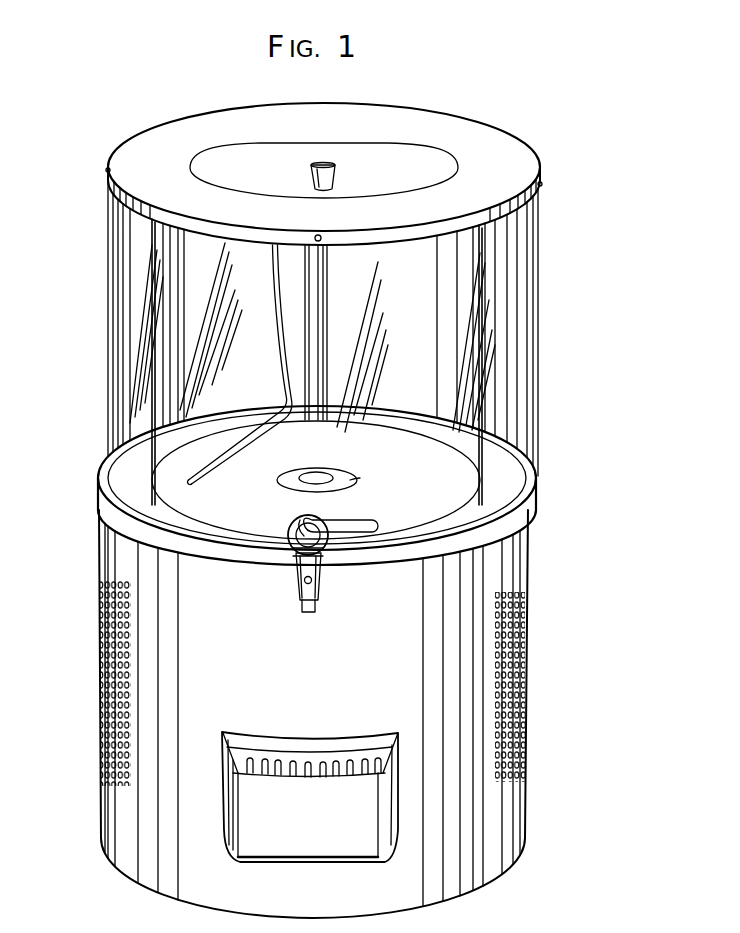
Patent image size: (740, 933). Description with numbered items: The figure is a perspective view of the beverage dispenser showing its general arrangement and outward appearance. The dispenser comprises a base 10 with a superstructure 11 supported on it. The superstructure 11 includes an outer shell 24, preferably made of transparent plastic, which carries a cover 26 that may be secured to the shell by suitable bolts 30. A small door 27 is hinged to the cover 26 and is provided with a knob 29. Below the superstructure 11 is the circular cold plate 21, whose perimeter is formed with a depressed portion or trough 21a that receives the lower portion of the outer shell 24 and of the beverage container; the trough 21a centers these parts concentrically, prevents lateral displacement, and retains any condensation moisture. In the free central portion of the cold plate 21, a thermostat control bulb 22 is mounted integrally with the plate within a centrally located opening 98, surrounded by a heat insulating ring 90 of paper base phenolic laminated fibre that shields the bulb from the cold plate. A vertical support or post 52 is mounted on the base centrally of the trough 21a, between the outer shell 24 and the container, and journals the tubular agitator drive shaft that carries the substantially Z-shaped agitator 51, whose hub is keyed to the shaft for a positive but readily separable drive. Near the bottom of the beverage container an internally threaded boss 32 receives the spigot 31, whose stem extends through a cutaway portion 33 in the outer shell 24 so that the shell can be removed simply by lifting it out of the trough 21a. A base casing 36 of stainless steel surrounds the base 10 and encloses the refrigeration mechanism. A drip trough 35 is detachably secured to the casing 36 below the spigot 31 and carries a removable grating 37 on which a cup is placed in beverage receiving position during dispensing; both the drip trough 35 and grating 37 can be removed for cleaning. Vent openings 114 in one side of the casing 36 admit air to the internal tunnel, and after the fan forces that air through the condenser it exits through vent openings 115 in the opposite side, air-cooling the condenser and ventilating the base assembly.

The base 10 is at (80, 557).
The superstructure 11 is at (80, 319).
The cold plate 21 is at (317, 379).
The trough 21a is at (406, 557).
The thermostat control bulb 22 is at (318, 480).
The outer shell 24 is at (533, 410).
The cover 26 is at (324, 174).
The small door 27 is at (324, 170).
The knob 29 is at (312, 167).
The bolts 30 is at (320, 236).
The spigot 31 is at (294, 584).
The internally threaded boss 32 is at (291, 531).
The cutaway portion 33 is at (322, 518).
The drip trough 35 is at (226, 790).
The base casing 36 is at (98, 791).
The grating 37 is at (291, 762).
The agitator 51 is at (278, 332).
The vertical support or post 52 is at (327, 296).
The heat insulating ring 90 is at (350, 480).
The centrally located opening 98 is at (280, 481).
The vent openings 114 is at (100, 663).
The vent openings 115 is at (522, 686).